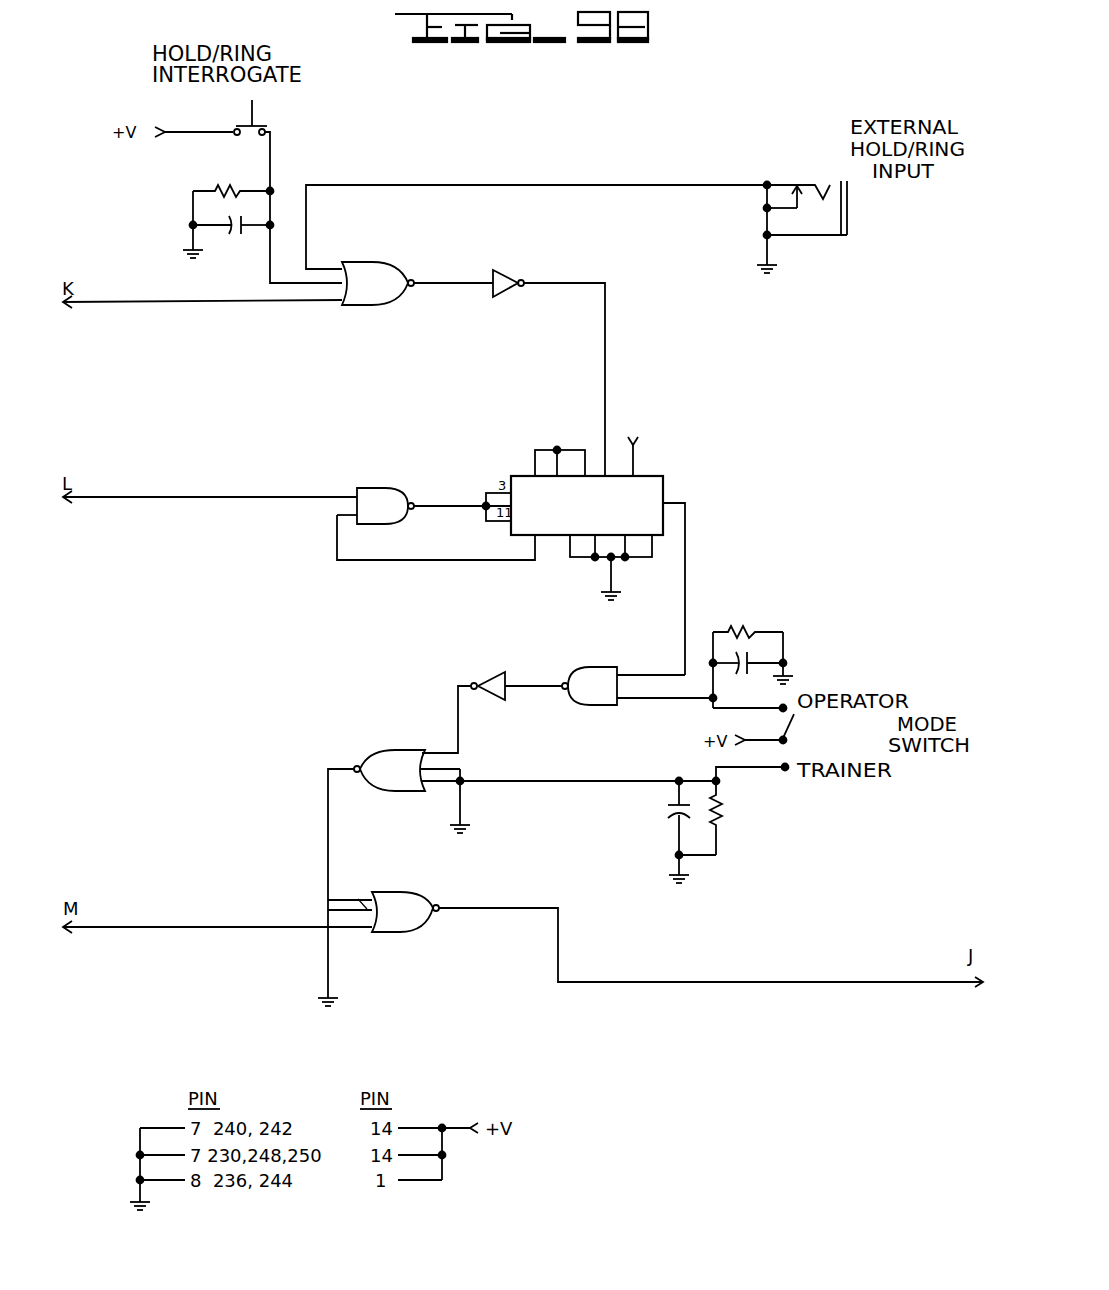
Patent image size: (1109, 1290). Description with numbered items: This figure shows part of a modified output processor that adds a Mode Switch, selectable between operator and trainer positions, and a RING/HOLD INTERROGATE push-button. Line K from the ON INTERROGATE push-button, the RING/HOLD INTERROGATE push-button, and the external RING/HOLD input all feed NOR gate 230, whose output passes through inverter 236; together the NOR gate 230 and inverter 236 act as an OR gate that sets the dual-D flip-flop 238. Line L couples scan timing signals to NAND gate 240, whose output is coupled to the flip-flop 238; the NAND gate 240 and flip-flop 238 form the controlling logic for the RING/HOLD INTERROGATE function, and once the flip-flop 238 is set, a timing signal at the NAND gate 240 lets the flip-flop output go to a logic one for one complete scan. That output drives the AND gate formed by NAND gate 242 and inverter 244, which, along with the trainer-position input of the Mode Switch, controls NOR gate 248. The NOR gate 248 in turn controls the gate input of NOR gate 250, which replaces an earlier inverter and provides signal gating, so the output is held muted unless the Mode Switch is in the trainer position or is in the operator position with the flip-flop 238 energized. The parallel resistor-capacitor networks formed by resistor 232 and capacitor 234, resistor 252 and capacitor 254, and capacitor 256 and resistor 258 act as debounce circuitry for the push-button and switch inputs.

The NOR gate 230 is at (370, 272).
The resistor 232 is at (220, 186).
The capacitor 234 is at (233, 237).
The inverter 236 is at (500, 272).
The dual-D flip-flop 238 is at (600, 516).
The NAND gate 240 is at (398, 518).
The NAND gate 242 is at (592, 674).
The inverter 244 is at (480, 680).
The NOR gate 248 is at (390, 760).
The NOR gate 250 is at (398, 900).
The resistor 252 is at (742, 632).
The capacitor 254 is at (752, 670).
The capacitor 256 is at (665, 808).
The resistor 258 is at (722, 808).